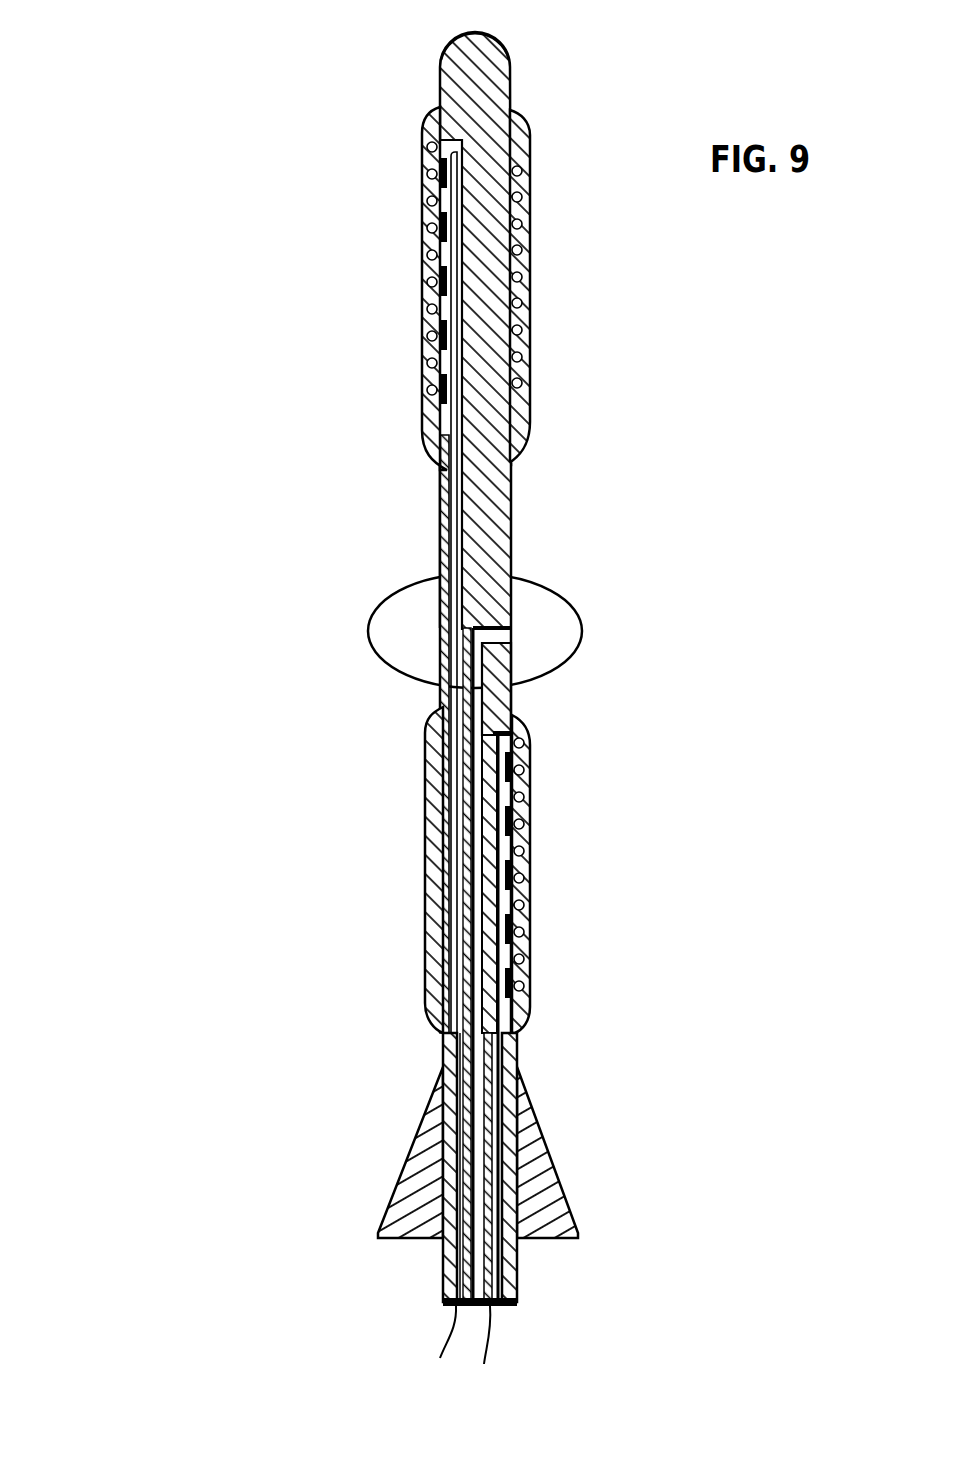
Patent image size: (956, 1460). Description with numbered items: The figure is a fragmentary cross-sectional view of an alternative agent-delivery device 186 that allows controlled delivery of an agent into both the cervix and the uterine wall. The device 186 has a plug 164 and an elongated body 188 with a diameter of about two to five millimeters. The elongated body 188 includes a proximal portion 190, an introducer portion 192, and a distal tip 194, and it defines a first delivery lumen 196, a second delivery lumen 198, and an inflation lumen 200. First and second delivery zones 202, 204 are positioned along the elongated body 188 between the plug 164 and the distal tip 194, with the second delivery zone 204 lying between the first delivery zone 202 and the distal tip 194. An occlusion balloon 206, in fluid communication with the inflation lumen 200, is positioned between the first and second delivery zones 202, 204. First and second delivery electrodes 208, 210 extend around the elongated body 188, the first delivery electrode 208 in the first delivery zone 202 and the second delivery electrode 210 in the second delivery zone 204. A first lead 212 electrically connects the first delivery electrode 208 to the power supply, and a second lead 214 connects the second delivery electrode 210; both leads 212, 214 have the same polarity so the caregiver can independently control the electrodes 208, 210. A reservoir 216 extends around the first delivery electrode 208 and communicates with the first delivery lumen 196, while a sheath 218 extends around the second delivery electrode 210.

The agent-delivery device 186 is at (192, 402).
The elongated body 188 is at (513, 523).
The proximal portion 190 is at (517, 1264).
The introducer portion 192 is at (486, 235).
The distal tip 194 is at (470, 32).
The first delivery lumen 196 is at (517, 1302).
The second delivery lumen 198 is at (444, 1302).
The inflation lumen 200 is at (478, 1306).
The first delivery zone 202 is at (552, 874).
The second delivery zone 204 is at (477, 288).
The occlusion balloon 206 is at (558, 598).
The first delivery electrode 208 is at (520, 933).
The second delivery electrode 210 is at (520, 381).
The first lead 212 is at (492, 1350).
The second lead 214 is at (436, 1354).
The reservoir 216 is at (425, 846).
The sheath 218 is at (422, 305).
The plug 164 is at (539, 1127).